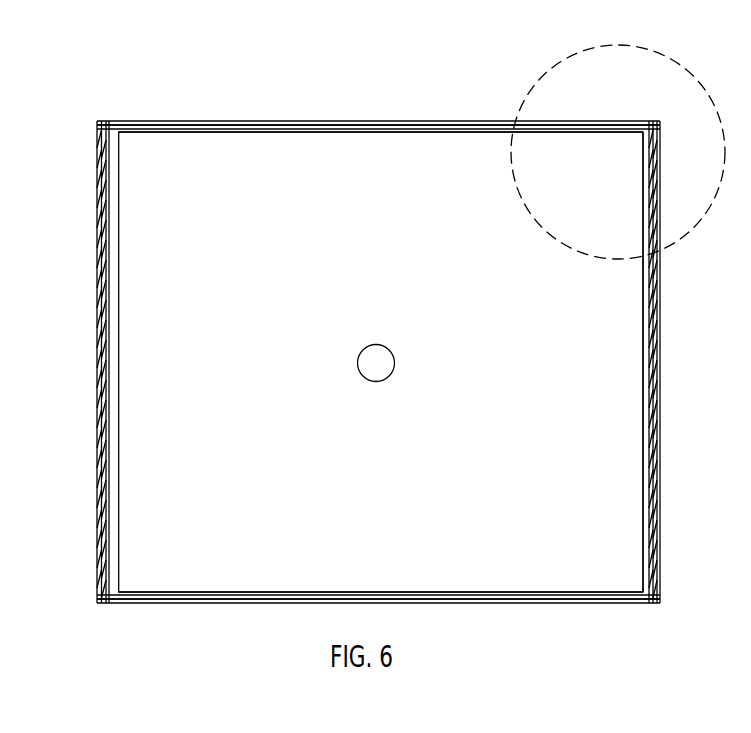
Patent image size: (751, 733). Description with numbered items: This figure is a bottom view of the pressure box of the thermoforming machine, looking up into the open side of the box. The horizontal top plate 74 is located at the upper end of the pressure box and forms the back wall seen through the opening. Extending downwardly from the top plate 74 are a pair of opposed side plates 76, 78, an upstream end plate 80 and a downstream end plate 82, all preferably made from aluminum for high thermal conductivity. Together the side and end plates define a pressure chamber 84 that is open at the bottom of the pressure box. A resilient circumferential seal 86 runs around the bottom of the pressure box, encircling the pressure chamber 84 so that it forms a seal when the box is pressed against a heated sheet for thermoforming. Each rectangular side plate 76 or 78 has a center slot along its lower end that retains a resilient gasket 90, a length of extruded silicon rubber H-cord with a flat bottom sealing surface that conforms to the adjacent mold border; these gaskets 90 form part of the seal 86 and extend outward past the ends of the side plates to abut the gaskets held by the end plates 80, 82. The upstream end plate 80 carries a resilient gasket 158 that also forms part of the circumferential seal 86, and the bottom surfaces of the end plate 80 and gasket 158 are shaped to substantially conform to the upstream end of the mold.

The top plate 74 is at (492, 323).
The side plate 76 is at (232, 120).
The side plate 78 is at (185, 603).
The upstream end plate 80 is at (97, 293).
The downstream end plate 82 is at (657, 340).
The pressure chamber 84 is at (612, 430).
The resilient circumferential seal 86 is at (548, 602).
The resilient gasket 90 is at (327, 120).
The resilient gasket 158 is at (102, 407).